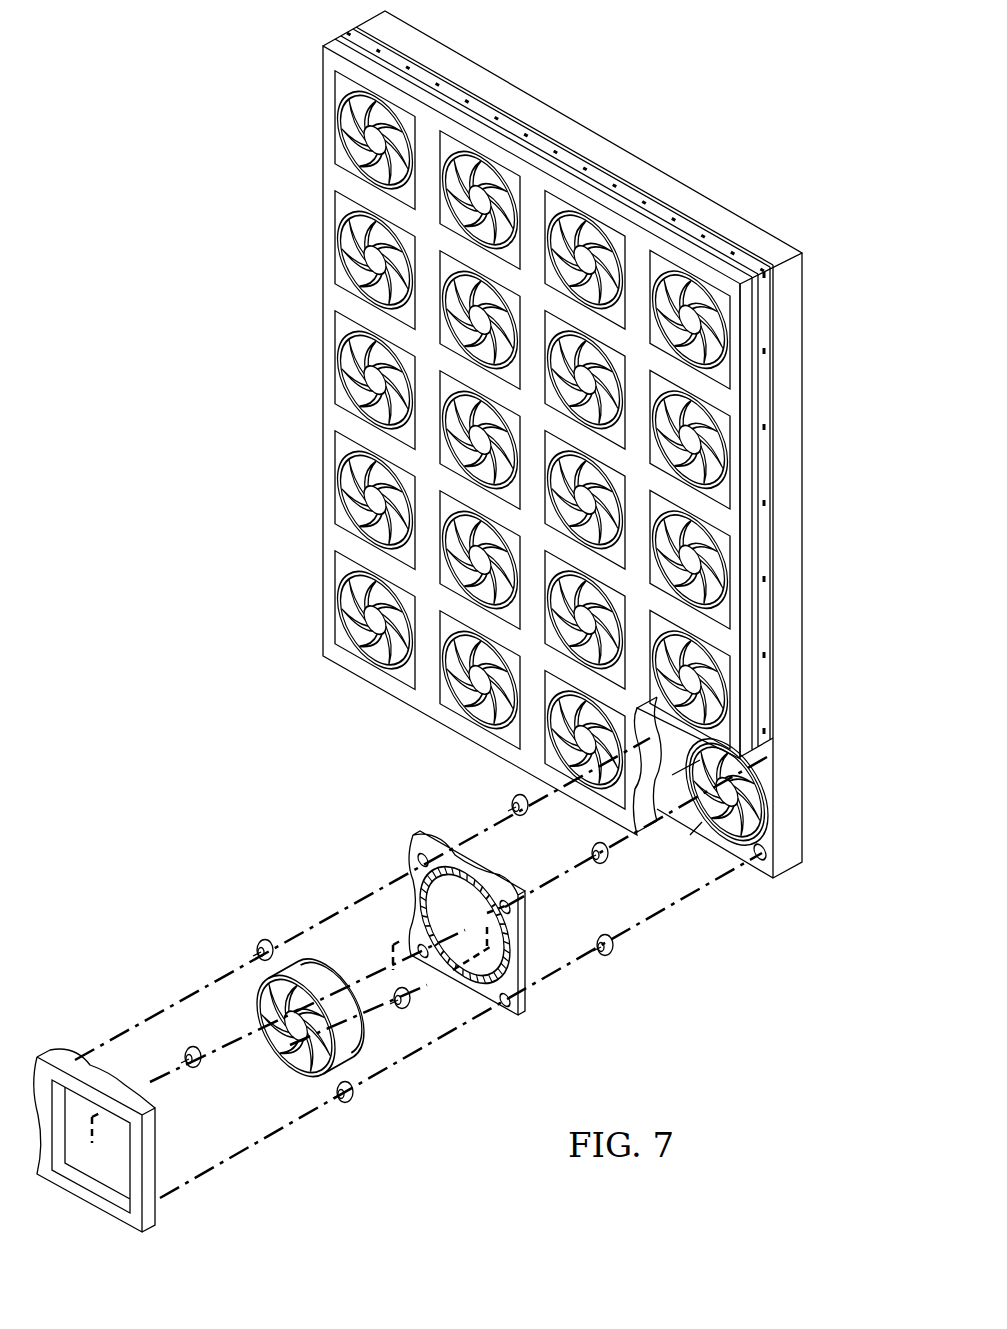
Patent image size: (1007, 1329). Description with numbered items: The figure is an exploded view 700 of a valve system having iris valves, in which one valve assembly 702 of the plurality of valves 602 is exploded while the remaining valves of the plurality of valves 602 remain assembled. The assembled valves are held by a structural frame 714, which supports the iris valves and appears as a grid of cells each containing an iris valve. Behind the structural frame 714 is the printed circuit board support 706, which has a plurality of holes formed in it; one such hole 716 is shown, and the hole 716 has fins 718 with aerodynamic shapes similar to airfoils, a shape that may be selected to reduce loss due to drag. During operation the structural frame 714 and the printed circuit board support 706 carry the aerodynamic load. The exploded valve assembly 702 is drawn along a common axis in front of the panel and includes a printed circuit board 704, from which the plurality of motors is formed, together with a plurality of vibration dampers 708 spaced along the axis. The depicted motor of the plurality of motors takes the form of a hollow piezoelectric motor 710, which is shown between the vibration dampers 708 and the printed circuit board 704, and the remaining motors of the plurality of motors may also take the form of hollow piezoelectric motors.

The plurality of valves 602 is at (250, 58).
The view 700 is at (596, 453).
The valve assembly 702 is at (400, 985).
The printed circuit board 704 is at (520, 1003).
The printed circuit board support 706 is at (790, 852).
The plurality of vibration dampers 708 is at (262, 940).
The hollow piezoelectric motor 710 is at (312, 1062).
The structural frame 714 is at (427, 702).
The hole 716 is at (707, 830).
The fins 718 is at (757, 806).